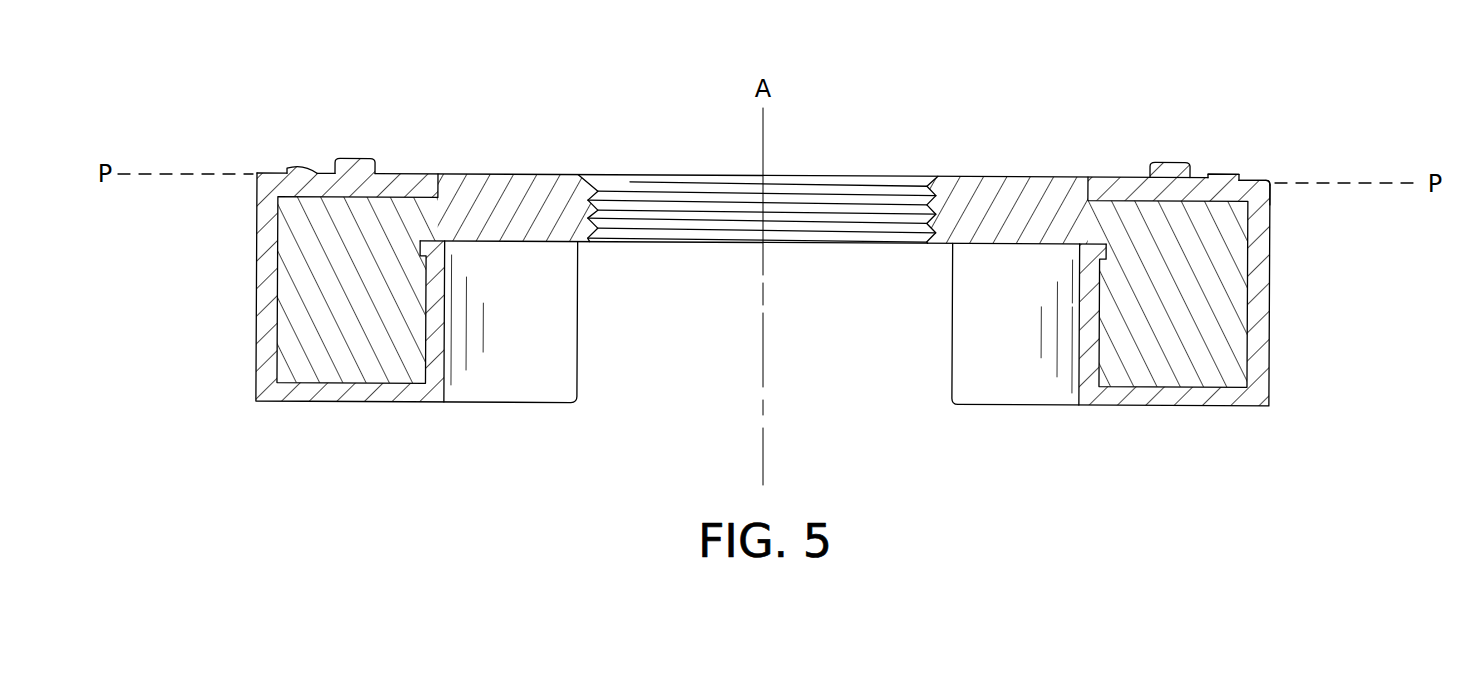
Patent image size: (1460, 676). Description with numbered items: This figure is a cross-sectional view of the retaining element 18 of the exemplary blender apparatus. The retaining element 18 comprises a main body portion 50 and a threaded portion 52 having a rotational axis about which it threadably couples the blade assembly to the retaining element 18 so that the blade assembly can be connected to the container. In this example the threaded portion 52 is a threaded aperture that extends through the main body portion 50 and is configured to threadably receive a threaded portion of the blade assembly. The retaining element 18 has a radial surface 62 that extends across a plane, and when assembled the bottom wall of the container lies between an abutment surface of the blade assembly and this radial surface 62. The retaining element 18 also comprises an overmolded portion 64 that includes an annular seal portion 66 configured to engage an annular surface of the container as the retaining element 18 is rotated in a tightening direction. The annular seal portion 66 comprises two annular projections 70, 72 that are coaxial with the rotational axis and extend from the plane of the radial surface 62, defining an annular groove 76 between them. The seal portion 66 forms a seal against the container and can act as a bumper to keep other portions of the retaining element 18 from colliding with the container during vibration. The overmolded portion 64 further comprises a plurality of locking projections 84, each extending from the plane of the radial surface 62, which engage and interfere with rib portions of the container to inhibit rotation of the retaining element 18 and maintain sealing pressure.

The retaining element 18 is at (1178, 408).
The main body portion 50 is at (258, 299).
The threaded portion 52 is at (665, 177).
The radial surface 62 is at (1008, 177).
The overmolded portion 64 is at (1272, 283).
The annular seal portion 66 is at (288, 167).
The annular projection 70 is at (1218, 172).
The annular projection 72 is at (1238, 175).
The annular groove 76 is at (1243, 142).
The locking projection 84 is at (353, 158).